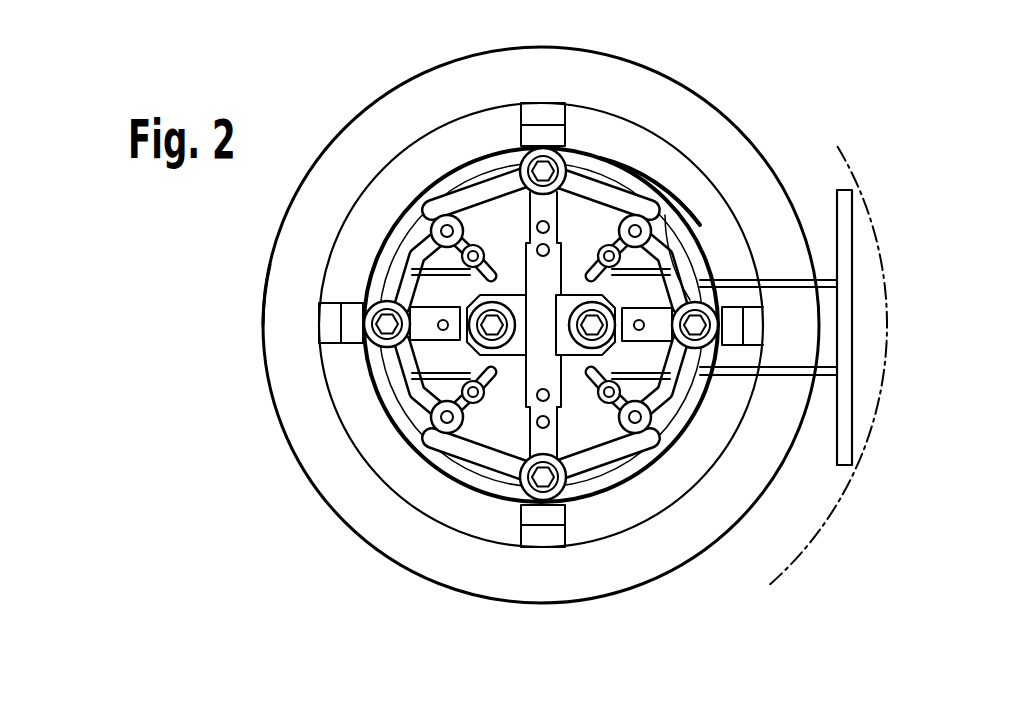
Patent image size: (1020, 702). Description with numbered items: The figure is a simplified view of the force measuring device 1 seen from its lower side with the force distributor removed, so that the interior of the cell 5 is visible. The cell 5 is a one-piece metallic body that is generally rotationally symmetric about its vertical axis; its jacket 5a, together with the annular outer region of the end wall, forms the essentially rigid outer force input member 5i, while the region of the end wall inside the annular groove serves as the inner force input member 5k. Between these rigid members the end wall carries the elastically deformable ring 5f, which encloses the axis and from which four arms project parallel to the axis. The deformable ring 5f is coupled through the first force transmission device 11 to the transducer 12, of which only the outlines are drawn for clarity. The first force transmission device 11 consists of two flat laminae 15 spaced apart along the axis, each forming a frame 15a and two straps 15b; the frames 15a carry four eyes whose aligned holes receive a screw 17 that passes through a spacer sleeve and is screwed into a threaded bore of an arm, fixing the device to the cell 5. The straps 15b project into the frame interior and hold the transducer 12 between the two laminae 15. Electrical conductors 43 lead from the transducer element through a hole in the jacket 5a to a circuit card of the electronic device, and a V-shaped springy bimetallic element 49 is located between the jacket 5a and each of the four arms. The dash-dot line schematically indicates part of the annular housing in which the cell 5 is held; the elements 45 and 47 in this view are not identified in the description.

The force measuring device 1 is at (282, 207).
The cell 5 is at (265, 298).
The jacket 5a is at (270, 334).
The elastically deformable ring 5f is at (596, 160).
The outer force input member 5i is at (657, 147).
The inner force input member 5k is at (640, 177).
The first force transmission device 11 is at (456, 168).
The transducer 12 is at (505, 254).
The laminae 15 is at (397, 400).
The frame 15a is at (393, 398).
The straps 15b is at (455, 465).
The screw 17 is at (380, 348).
The electrical conductors 43 is at (730, 265).
The plate 45 is at (837, 450).
The contour line 47 is at (827, 527).
The V-shaped springy bimetallic element 49 is at (549, 102).